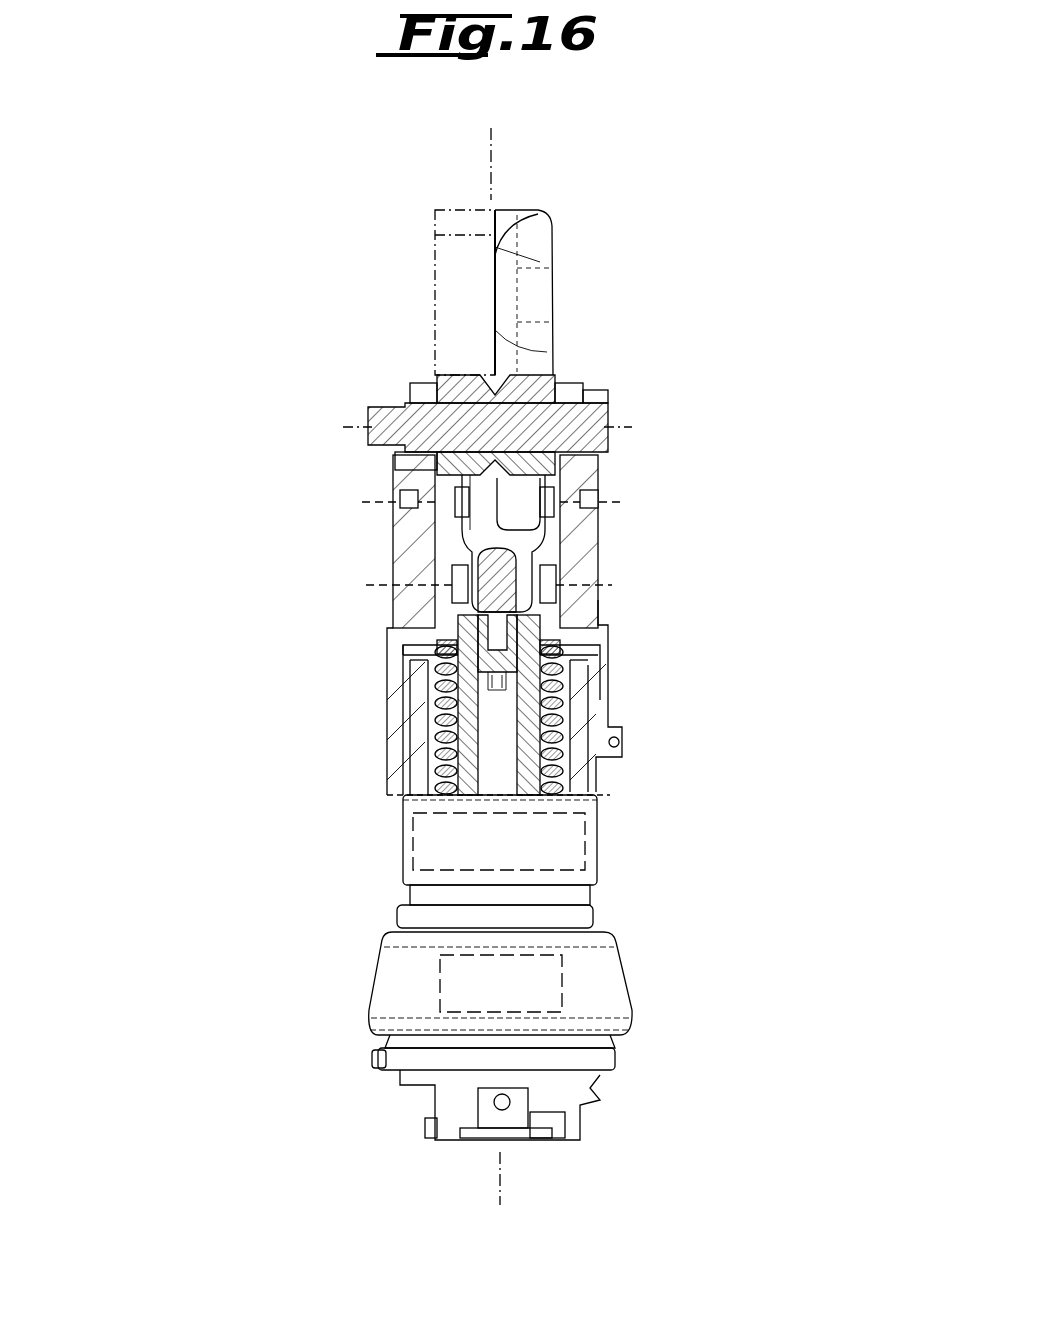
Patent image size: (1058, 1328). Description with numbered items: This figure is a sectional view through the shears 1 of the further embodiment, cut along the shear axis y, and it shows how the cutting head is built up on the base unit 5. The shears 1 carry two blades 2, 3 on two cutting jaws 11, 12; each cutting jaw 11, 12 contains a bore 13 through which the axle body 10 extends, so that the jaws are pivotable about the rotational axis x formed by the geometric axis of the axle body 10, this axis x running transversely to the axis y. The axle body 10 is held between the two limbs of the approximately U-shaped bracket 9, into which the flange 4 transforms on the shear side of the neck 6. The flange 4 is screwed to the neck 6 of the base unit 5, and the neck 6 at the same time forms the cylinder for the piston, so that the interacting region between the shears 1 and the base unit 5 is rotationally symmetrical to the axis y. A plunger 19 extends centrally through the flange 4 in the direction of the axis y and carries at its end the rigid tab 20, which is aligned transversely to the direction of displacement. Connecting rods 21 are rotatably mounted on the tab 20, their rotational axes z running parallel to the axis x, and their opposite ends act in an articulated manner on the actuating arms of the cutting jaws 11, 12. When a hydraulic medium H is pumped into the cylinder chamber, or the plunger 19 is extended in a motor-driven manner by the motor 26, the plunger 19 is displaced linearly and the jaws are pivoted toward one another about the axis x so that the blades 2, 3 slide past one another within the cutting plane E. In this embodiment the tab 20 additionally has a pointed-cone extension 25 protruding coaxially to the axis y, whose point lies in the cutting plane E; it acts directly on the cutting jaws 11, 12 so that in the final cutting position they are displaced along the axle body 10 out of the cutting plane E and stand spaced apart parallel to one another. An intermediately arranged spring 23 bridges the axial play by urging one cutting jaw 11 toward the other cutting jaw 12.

The shears 1 is at (590, 187).
The blade 2 is at (545, 243).
The blade 3 is at (495, 247).
The flange 4 is at (598, 690).
The base unit 5 is at (442, 748).
The neck 6 is at (593, 850).
The bracket 9 is at (590, 525).
The axle body 10 is at (428, 413).
The cutting jaw 11 is at (542, 298).
The cutting jaw 12 is at (447, 268).
The bore 13 is at (465, 385).
The plunger 19 is at (555, 648).
The tab 20 is at (495, 580).
The connecting rod 21 is at (468, 555).
The spring 23 is at (400, 462).
The extension 25 is at (540, 553).
The motor 26 is at (565, 986).
The hydraulic medium H is at (598, 820).
The cutting plane E is at (493, 150).
The rotational axis x is at (483, 426).
The axis y is at (495, 661).
The rotational axis z is at (491, 539).